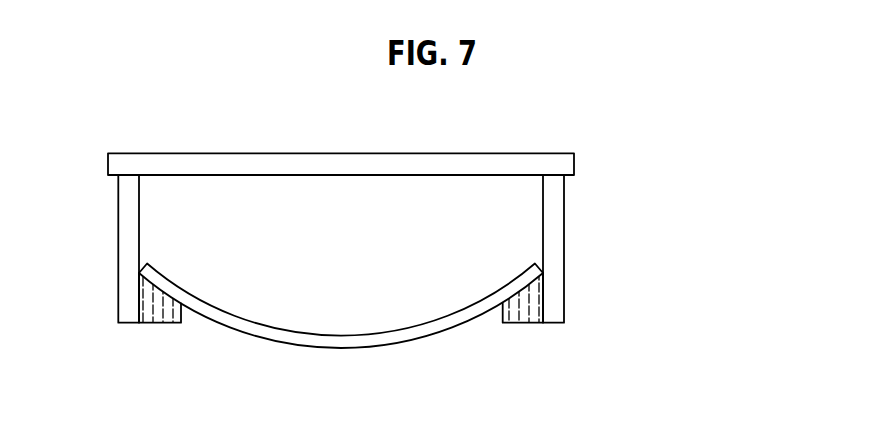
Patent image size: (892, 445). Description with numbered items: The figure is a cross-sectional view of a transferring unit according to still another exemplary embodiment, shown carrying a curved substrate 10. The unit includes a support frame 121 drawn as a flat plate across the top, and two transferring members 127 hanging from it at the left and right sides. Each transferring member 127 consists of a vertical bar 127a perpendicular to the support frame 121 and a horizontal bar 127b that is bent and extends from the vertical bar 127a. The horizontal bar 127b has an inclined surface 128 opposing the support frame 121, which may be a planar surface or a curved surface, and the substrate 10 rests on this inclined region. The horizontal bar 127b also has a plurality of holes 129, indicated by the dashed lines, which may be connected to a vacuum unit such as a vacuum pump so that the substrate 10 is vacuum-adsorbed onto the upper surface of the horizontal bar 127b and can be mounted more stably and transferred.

The substrate 10 is at (263, 333).
The support frame 121 is at (563, 164).
The transferring member 127 is at (414, 284).
The vertical bar 127a is at (553, 246).
The horizontal bar 127b is at (550, 333).
The inclined surface 128 is at (522, 307).
The holes 129 is at (535, 307).